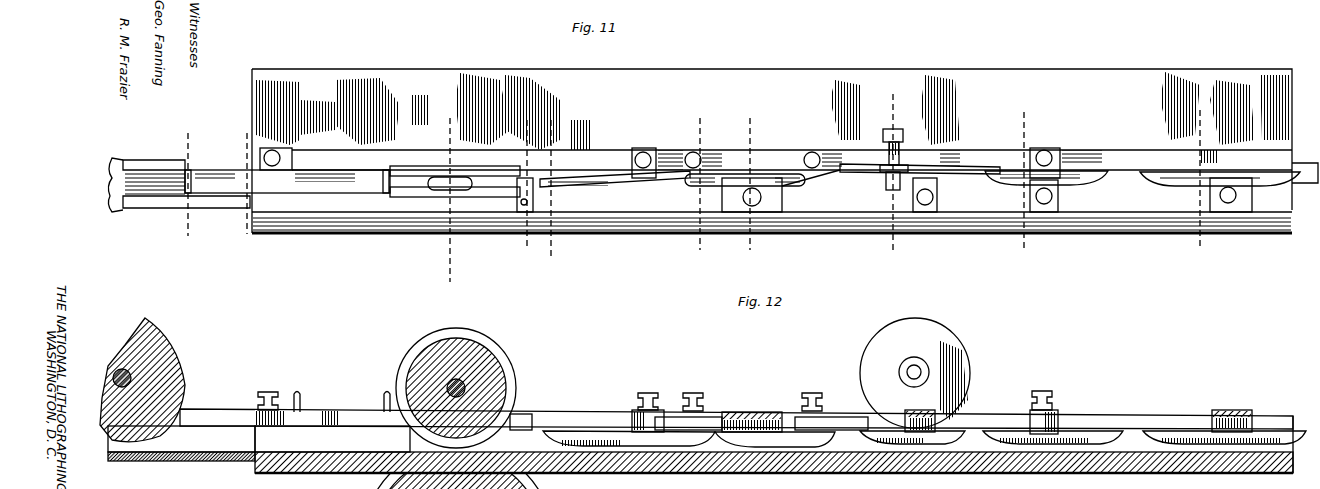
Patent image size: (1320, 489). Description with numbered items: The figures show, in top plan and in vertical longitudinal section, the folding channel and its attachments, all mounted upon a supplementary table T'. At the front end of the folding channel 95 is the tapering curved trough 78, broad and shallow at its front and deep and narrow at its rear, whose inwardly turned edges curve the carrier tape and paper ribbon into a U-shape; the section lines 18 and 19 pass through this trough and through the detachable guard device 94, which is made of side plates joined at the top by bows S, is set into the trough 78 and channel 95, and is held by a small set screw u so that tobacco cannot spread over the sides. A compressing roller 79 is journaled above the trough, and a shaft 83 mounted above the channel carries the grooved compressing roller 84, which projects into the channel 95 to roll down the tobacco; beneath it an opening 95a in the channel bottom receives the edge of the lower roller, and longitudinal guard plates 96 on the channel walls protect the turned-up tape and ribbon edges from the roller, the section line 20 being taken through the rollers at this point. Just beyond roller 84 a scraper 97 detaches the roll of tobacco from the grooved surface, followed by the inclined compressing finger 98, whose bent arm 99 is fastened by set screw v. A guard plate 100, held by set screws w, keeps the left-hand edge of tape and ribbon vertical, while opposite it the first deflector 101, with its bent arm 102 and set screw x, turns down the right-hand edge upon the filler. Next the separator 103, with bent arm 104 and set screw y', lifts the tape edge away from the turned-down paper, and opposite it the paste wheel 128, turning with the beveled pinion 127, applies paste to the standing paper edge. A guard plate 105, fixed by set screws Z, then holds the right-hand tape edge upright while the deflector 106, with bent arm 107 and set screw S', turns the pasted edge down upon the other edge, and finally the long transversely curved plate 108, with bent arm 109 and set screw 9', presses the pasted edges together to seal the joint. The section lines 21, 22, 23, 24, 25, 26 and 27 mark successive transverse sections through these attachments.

In FIG. 11, the supplementary table T' is at (785, 141).
In FIG. 11, the section line 18 is at (186, 184).
In FIG. 11, the section line 19 is at (236, 183).
In FIG. 11, the section line 20 is at (445, 200).
In FIG. 11, the section line 21 is at (526, 186).
In FIG. 11, the section line 22 is at (552, 190).
In FIG. 11, the section line 23 is at (699, 184).
In FIG. 11, the section line 24 is at (751, 184).
In FIG. 11, the section line 25 is at (890, 174).
In FIG. 11, the section line 26 is at (1023, 182).
In FIG. 11, the section line 27 is at (1198, 178).
In FIG. 11, the tapering curved trough 78 is at (179, 193).
In FIG. 12, the tapering curved trough 78 is at (181, 454).
In FIG. 12, the compressing roller 79 is at (156, 380).
In FIG. 12, the shaft 83 is at (462, 384).
In FIG. 12, the compressing roller 84 is at (466, 388).
In FIG. 11, the detachable guard device 94 is at (738, 165).
In FIG. 12, the detachable guard device 94 is at (736, 408).
In FIG. 12, the folding channel 95 is at (574, 408).
In FIG. 11, the opening 95a is at (443, 187).
In FIG. 11, the guard plates 96 is at (465, 167).
In FIG. 12, the guard plates 96 is at (340, 442).
In FIG. 11, the scraper 97 is at (521, 178).
In FIG. 12, the scraper 97 is at (526, 414).
In FIG. 11, the compressing finger 98 is at (573, 182).
In FIG. 12, the compressing finger 98 is at (596, 432).
In FIG. 11, the bent arm 99 is at (646, 167).
In FIG. 11, the guard plate 100 is at (745, 169).
In FIG. 12, the guard plate 100 is at (712, 418).
In FIG. 11, the first deflector 101 is at (700, 187).
In FIG. 12, the first deflector 101 is at (752, 413).
In FIG. 11, the bent arm 102 is at (770, 212).
In FIG. 11, the separator 103 is at (946, 196).
In FIG. 11, the bent arm 104 is at (920, 213).
In FIG. 12, the bent arm 104 is at (925, 422).
In FIG. 11, the guard plate 105 is at (1084, 219).
In FIG. 11, the deflector 106 is at (1003, 176).
In FIG. 12, the deflector 106 is at (1072, 430).
In FIG. 11, the bent arm 107 is at (1055, 152).
In FIG. 12, the bent arm 107 is at (1052, 412).
In FIG. 11, the transversely curved plate 108 is at (1172, 186).
In FIG. 12, the transversely curved plate 108 is at (1224, 419).
In FIG. 11, the bent arm 109 is at (1267, 219).
In FIG. 12, the bent arm 109 is at (1250, 412).
In FIG. 11, the beveled pinion 127 is at (879, 155).
In FIG. 11, the paste wheel 128 is at (923, 168).
In FIG. 12, the paste wheel 128 is at (915, 375).
In FIG. 11, the set screw u is at (268, 152).
In FIG. 11, the set screw v is at (632, 159).
In FIG. 12, the set screw v is at (648, 405).
In FIG. 11, the set screws w is at (692, 152).
In FIG. 12, the set screws w is at (540, 393).
In FIG. 11, the block x is at (752, 205).
In FIG. 11, the set screw y' is at (931, 195).
In FIG. 11, the set screws Z is at (1044, 203).
In FIG. 11, the bows S is at (287, 217).
In FIG. 12, the bows S is at (342, 392).
In FIG. 11, the set screw S' is at (1045, 151).
In FIG. 12, the set screw S' is at (1037, 406).
In FIG. 11, the set screw 9' is at (1231, 202).